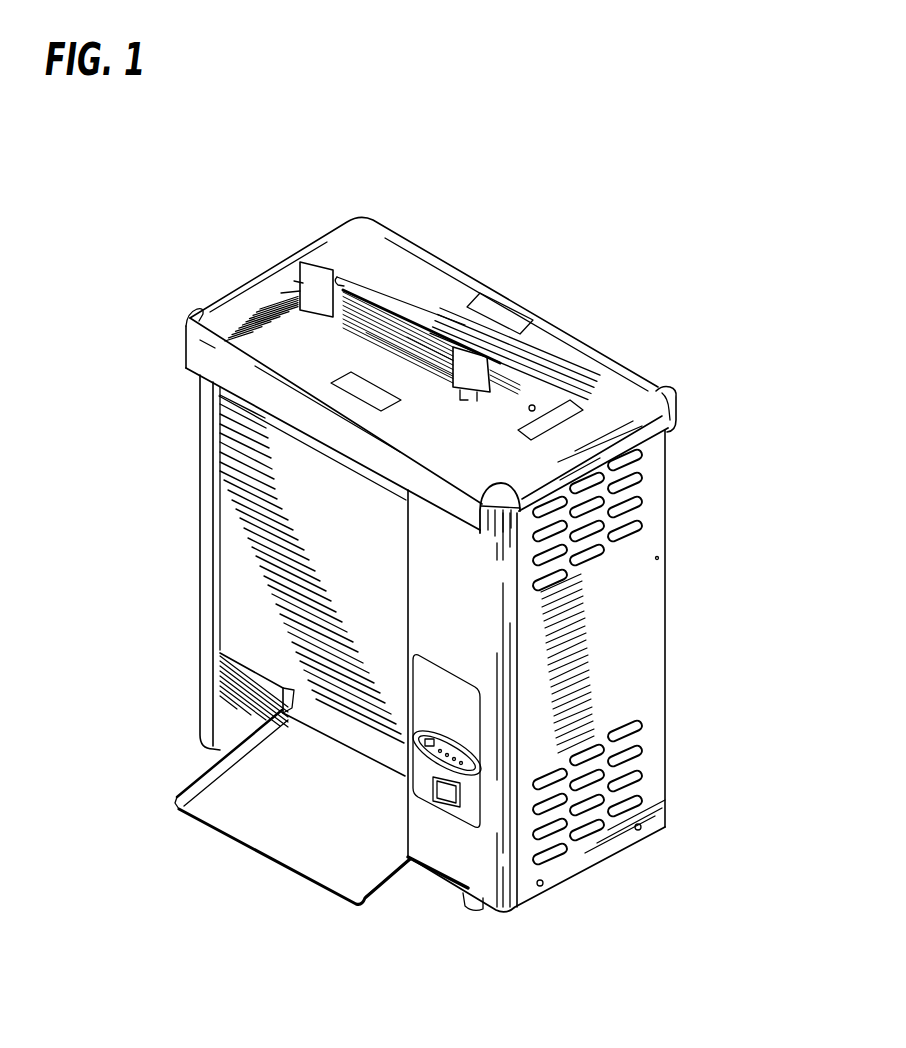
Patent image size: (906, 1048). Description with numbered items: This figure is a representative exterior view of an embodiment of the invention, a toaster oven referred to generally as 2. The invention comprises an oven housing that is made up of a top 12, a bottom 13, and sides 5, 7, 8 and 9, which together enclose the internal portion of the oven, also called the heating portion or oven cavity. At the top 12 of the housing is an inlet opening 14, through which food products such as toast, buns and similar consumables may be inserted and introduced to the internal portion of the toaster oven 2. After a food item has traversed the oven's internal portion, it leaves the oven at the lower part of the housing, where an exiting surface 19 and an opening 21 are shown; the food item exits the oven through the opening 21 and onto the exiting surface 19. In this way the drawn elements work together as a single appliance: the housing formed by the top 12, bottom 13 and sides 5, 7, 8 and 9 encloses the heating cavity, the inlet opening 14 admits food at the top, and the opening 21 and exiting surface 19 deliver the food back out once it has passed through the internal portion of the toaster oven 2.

The toaster oven 2 is at (587, 307).
The top 12 is at (367, 250).
The inlet opening 14 is at (380, 337).
The side 7 is at (199, 453).
The side 9 is at (330, 527).
The exiting surface 19 is at (298, 745).
The opening 21 is at (205, 762).
The bottom 13 is at (443, 880).
The side 5 is at (637, 625).
The side 8 is at (665, 523).